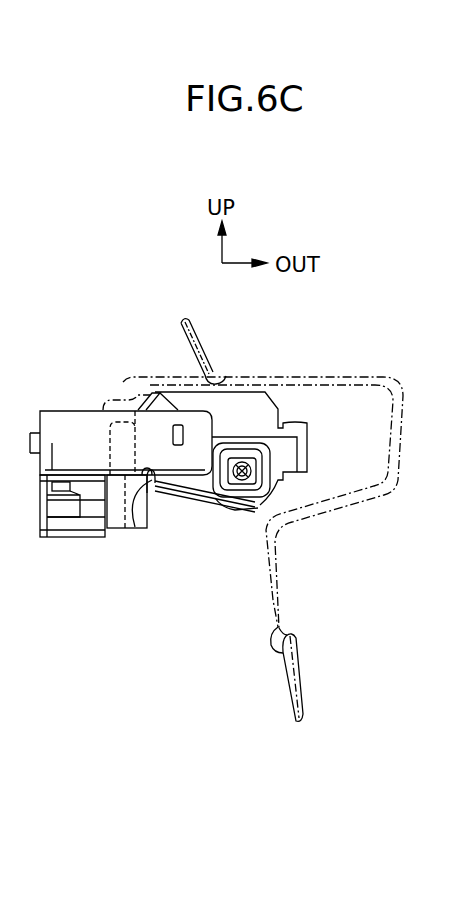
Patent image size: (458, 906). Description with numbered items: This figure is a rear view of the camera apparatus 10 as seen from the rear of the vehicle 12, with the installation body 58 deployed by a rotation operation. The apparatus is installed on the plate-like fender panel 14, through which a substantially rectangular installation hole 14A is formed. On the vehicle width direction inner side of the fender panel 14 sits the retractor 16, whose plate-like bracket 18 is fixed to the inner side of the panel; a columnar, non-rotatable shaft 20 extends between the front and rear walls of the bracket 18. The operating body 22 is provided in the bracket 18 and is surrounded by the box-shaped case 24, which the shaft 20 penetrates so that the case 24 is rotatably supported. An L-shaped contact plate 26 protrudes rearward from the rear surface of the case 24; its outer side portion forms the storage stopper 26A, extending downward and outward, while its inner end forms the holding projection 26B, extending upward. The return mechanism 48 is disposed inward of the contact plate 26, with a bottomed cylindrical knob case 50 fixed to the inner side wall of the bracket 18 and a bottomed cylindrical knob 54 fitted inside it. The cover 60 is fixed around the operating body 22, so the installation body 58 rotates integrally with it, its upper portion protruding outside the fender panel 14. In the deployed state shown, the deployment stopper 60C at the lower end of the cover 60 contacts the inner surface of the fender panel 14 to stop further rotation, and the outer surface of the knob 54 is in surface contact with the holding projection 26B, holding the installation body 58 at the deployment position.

The camera apparatus 10 is at (396, 353).
The vehicle 12 is at (206, 337).
The fender panel 14 is at (303, 688).
The installation hole 14A is at (222, 381).
The retractor 16 is at (62, 411).
The bracket 18 is at (88, 410).
The shaft 20 is at (177, 425).
The operating body 22 is at (308, 445).
The case 24 is at (310, 475).
The contact plate 26 is at (184, 495).
The storage stopper 26A is at (223, 514).
The holding projection 26B is at (135, 527).
The return mechanism 48 is at (58, 536).
The knob case 50 is at (82, 538).
The knob 54 is at (125, 530).
The installation body 58 is at (350, 376).
The cover 60 is at (358, 508).
The deployment stopper 60C is at (281, 653).